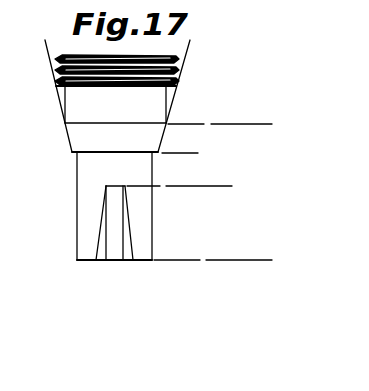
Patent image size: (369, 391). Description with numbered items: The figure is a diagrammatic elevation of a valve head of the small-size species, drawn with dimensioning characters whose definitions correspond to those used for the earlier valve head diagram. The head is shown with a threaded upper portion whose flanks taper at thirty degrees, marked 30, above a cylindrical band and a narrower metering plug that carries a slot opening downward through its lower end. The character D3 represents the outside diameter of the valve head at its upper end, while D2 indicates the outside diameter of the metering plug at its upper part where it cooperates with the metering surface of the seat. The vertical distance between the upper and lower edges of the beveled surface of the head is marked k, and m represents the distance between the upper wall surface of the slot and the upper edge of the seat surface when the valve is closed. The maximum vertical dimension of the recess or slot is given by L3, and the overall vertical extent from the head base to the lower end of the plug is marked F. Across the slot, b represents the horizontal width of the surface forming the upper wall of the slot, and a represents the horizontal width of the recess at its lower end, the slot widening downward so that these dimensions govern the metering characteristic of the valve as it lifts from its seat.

The bore 30 is at (46, 50).
The outside diameter of the valve head at its upper end D3 is at (166, 105).
The outside diameter of the metering plug D2 is at (152, 166).
The vertical distance between upper and lower edges of the beveled surface k is at (190, 113).
The distance between upper wall surface of slot and upper edge of seat surface m is at (222, 124).
The maximum vertical dimension of the recess or slot L3 is at (226, 186).
The overall length from head base to shank end F is at (263, 124).
The horizontal width of the surface forming the upper wall of the slot b is at (123, 262).
The horizontal width of the recess at its lower end a is at (132, 262).